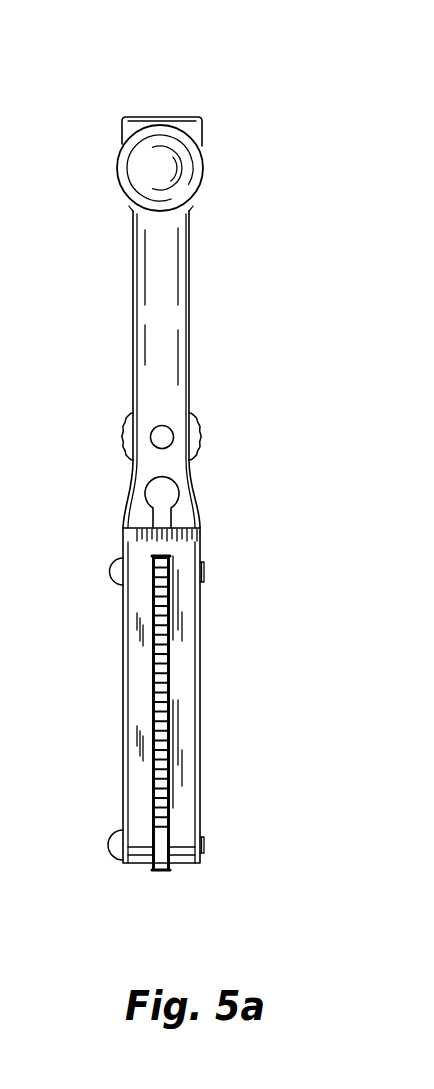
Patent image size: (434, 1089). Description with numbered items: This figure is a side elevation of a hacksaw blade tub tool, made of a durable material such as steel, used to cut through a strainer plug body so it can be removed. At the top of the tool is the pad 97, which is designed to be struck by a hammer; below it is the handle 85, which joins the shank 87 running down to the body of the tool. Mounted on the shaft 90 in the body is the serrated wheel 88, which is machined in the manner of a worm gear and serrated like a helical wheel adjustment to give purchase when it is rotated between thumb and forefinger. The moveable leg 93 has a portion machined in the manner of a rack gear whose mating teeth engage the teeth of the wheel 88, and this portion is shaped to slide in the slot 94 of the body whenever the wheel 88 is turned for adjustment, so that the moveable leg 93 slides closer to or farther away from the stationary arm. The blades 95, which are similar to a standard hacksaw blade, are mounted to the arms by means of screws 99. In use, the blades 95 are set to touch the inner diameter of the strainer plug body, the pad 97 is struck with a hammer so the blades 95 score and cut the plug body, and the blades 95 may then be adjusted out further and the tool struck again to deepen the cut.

The handle 85 is at (120, 190).
The shank 87 is at (190, 292).
The serrated wheel 88 is at (122, 432).
The shaft 90 is at (163, 425).
The moveable leg 93 is at (123, 690).
The slot 94 is at (178, 490).
The blades 95 is at (162, 871).
The pad 97 is at (150, 117).
The screws 99 is at (115, 578).